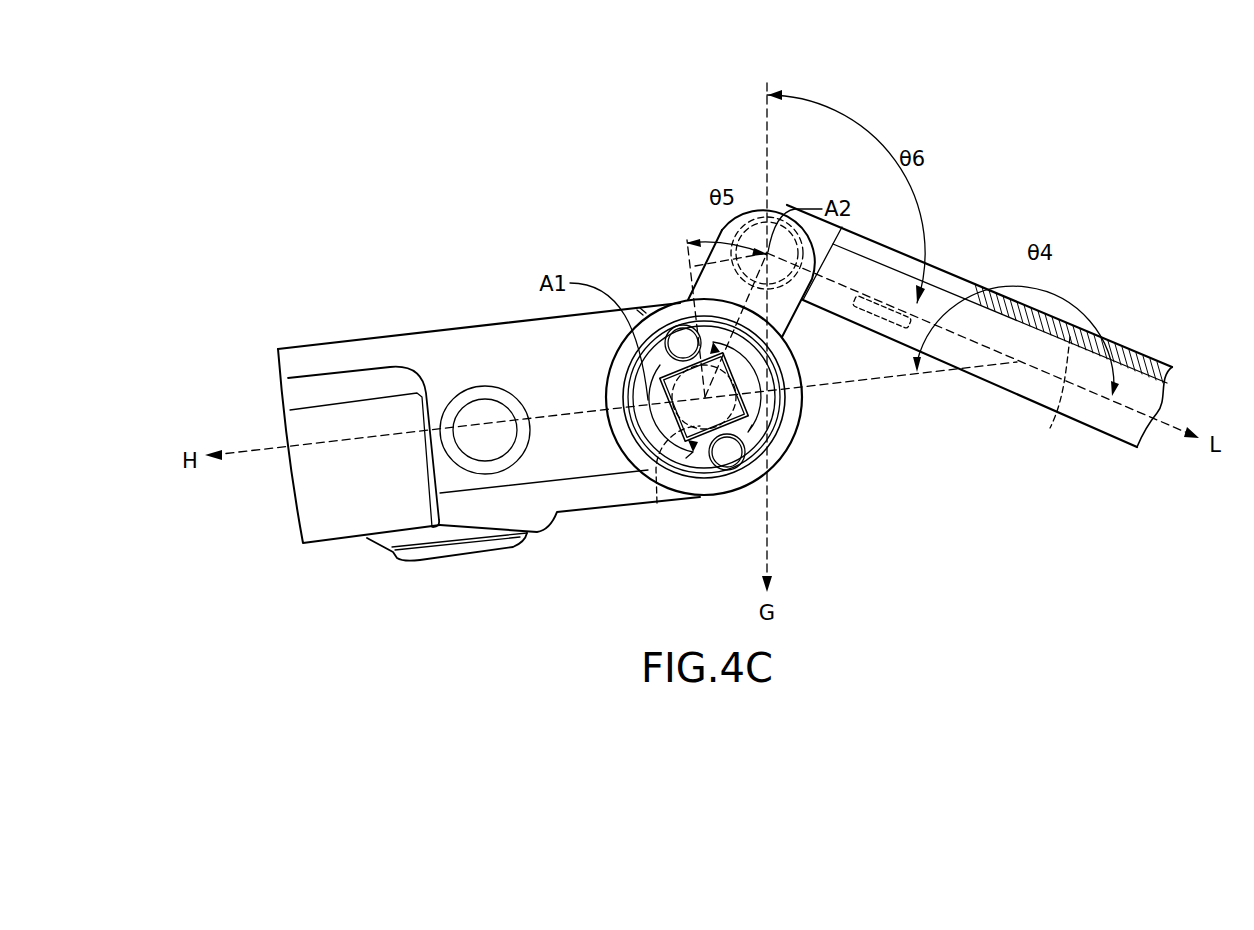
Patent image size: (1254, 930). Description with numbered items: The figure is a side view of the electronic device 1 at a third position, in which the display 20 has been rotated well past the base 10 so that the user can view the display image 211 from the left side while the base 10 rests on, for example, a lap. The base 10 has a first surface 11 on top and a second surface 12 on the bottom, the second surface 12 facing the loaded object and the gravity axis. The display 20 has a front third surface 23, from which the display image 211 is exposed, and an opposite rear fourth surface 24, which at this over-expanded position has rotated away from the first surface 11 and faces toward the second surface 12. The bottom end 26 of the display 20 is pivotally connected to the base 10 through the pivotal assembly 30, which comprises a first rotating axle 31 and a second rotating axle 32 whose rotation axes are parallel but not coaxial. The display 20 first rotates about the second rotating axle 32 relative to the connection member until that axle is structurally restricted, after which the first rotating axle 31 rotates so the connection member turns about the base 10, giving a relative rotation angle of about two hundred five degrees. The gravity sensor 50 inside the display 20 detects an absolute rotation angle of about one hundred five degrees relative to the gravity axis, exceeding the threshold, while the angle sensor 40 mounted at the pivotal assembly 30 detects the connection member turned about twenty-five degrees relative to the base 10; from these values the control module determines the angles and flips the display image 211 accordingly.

The electronic device 1 is at (141, 99).
The base 10 is at (377, 321).
The first surface 11 is at (460, 327).
The second surface 12 is at (610, 508).
The display 20 is at (1146, 334).
The third surface 23 is at (870, 238).
The fourth surface 24 is at (980, 380).
The bottom end 26 is at (778, 203).
The pivotal assembly 30 is at (742, 497).
The first rotating axle 31 is at (658, 482).
The second rotating axle 32 is at (752, 227).
The angle sensor 40 is at (681, 464).
The gravity sensor 50 is at (875, 306).
The display image 211 is at (1055, 415).